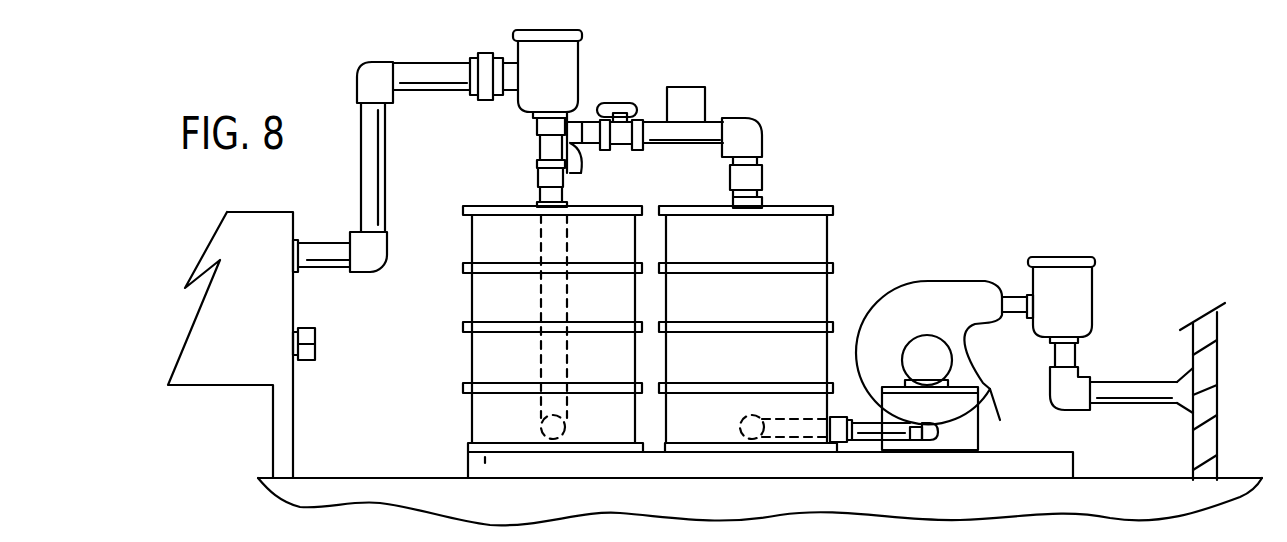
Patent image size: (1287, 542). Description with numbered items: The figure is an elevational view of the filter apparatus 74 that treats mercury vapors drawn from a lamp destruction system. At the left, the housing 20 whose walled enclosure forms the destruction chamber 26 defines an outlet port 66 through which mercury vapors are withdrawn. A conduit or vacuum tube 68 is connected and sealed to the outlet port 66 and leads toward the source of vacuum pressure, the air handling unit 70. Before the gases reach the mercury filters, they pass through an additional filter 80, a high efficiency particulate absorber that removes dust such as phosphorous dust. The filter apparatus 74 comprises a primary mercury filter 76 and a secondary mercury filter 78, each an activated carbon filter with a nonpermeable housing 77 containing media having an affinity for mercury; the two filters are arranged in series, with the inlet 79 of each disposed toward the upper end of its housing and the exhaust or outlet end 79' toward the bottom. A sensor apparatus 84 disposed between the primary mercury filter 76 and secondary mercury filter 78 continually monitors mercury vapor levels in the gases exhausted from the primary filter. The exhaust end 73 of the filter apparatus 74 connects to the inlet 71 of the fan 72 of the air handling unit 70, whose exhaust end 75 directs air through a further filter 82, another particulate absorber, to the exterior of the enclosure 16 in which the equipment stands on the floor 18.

The enclosure 16 is at (1193, 447).
The floor 18 is at (350, 477).
The housing 20 is at (258, 320).
The destruction chamber 26 is at (230, 384).
The outlet port 66 is at (297, 240).
The conduit or vacuum tube 68 is at (337, 265).
The air handling unit 70 is at (955, 275).
The inlet to the fan 71 is at (930, 435).
The fan 72 is at (972, 377).
The exhaust end of filter apparatus 73 is at (855, 440).
The filter apparatus 74 is at (838, 222).
The exhaust end of the fan 75 is at (1020, 310).
The primary mercury filter 76 is at (472, 393).
The housing 77 is at (490, 335).
The secondary mercury filter 78 is at (840, 298).
The inlet 79 is at (654, 163).
The exhaust or outlet end 79' is at (685, 327).
The additional filter 80 is at (573, 67).
The further filter 82 is at (1080, 303).
The sensor apparatus 84 is at (712, 113).